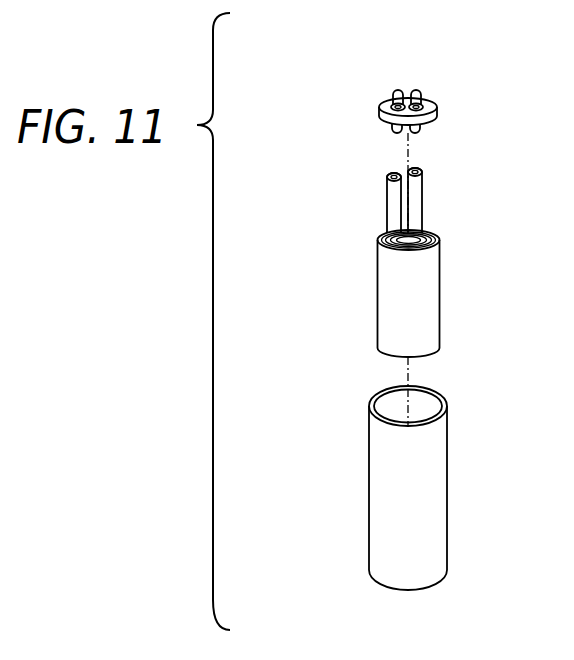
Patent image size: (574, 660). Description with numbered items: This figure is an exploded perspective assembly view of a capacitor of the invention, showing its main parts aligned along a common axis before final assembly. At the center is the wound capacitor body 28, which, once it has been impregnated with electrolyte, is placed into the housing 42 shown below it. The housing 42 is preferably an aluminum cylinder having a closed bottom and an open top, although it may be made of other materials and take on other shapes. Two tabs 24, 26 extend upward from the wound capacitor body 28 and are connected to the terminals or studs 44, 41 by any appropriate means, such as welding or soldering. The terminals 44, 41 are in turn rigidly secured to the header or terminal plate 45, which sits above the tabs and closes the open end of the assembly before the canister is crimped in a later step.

The tab 24 is at (388, 202).
The tab 26 is at (422, 187).
The wound capacitor body 28 is at (440, 310).
The terminal 41 is at (415, 87).
The housing 42 is at (388, 486).
The terminal 44 is at (397, 88).
The header 45 is at (437, 112).